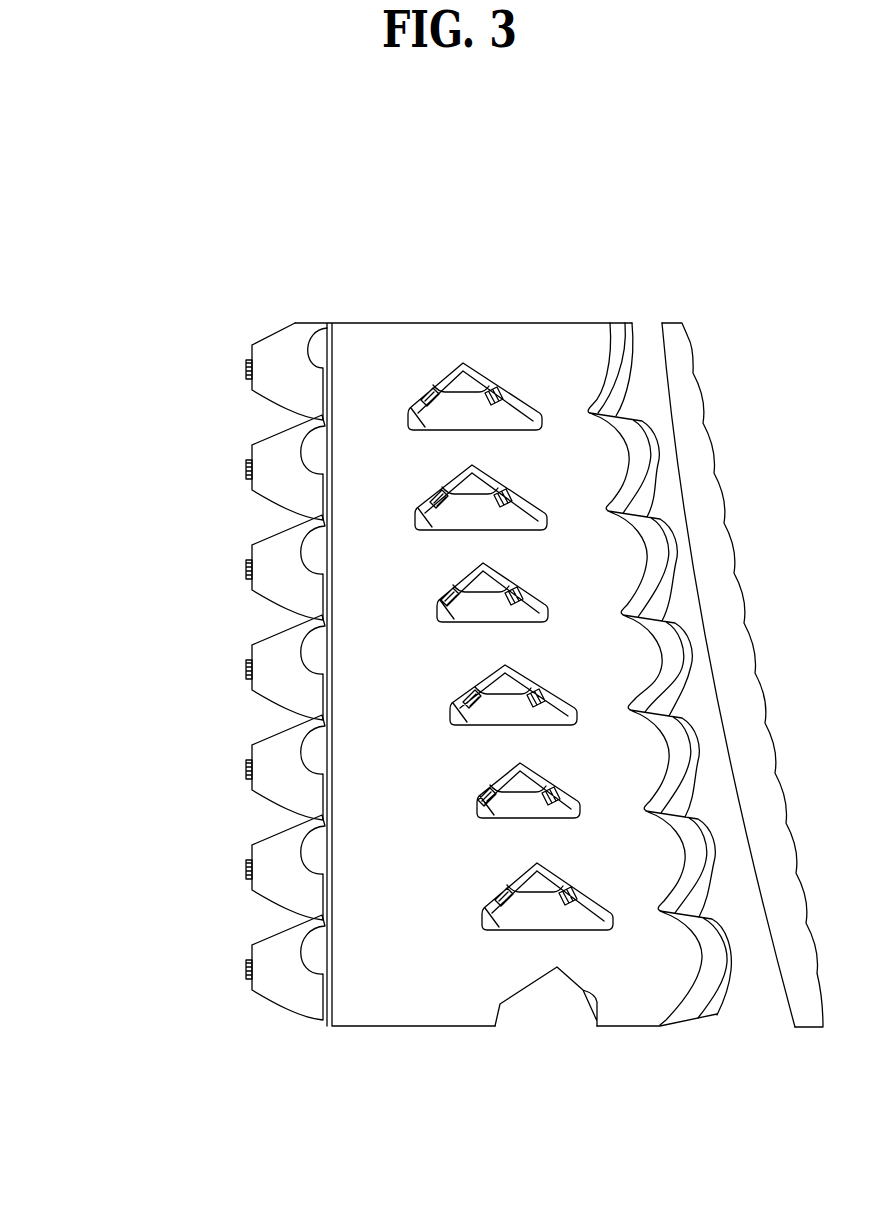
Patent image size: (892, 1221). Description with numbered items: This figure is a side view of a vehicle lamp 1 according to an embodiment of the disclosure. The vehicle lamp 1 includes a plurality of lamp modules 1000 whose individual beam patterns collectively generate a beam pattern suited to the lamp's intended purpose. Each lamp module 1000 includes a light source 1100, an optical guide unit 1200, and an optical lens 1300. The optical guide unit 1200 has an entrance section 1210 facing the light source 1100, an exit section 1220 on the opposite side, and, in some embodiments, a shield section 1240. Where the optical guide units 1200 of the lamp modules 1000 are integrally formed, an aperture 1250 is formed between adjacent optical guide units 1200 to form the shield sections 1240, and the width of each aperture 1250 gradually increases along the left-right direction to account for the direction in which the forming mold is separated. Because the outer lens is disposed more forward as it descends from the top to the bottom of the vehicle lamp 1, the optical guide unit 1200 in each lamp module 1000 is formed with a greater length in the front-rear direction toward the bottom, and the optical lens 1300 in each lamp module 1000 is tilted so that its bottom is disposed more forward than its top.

The vehicle lamp 1 is at (747, 148).
The lamp module 1000 is at (204, 509).
The light source 1100 is at (246, 366).
The optical guide unit 1200 is at (527, 314).
The entrance section 1210 is at (251, 320).
The exit section 1220 is at (640, 350).
The shield section 1240 is at (475, 385).
The aperture 1250 is at (452, 391).
The optical lens 1300 is at (675, 348).